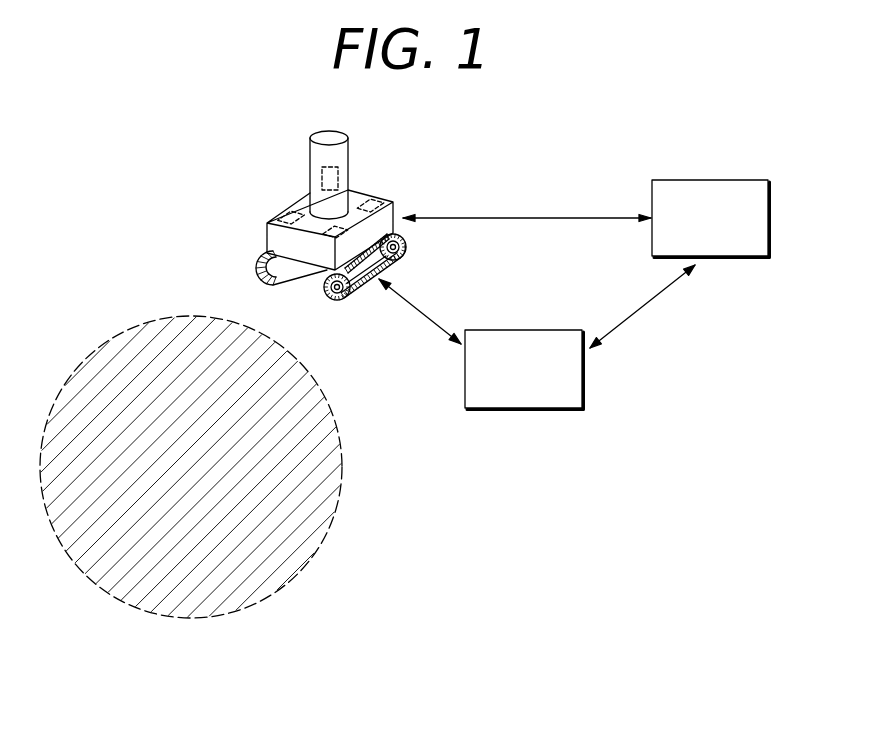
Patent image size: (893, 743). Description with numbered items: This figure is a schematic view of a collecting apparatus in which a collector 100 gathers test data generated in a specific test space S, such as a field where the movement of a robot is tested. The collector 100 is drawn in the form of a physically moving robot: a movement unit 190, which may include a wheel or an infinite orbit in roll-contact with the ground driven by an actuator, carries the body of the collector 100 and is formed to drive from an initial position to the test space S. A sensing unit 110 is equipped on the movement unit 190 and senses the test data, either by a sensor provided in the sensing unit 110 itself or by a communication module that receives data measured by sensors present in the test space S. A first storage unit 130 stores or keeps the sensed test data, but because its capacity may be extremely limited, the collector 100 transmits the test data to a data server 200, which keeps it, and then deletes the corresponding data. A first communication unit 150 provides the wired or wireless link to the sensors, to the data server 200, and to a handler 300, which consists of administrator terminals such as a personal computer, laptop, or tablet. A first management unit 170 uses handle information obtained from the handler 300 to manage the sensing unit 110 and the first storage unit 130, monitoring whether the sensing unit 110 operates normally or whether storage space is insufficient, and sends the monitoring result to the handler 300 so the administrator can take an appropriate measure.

The collector 100 is at (285, 241).
The sensing unit 110 is at (325, 172).
The first storage unit 130 is at (281, 221).
The first communication unit 150 is at (371, 200).
The first management unit 170 is at (325, 236).
The movement unit 190 is at (329, 301).
The data server 200 is at (726, 180).
The handler 300 is at (537, 330).
The specific test space S is at (118, 354).